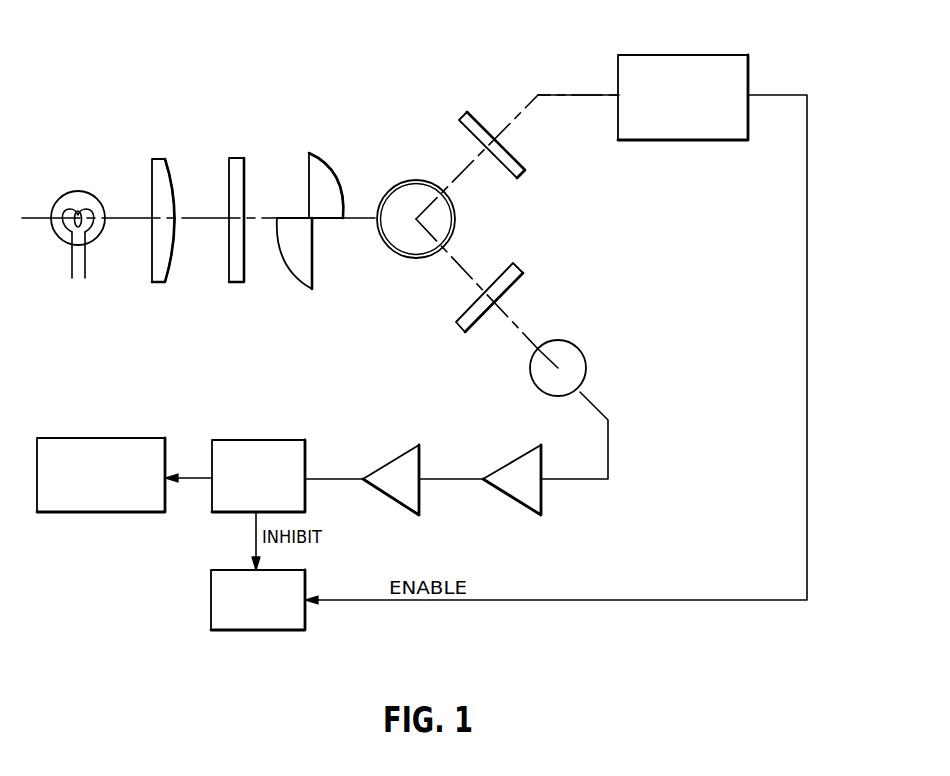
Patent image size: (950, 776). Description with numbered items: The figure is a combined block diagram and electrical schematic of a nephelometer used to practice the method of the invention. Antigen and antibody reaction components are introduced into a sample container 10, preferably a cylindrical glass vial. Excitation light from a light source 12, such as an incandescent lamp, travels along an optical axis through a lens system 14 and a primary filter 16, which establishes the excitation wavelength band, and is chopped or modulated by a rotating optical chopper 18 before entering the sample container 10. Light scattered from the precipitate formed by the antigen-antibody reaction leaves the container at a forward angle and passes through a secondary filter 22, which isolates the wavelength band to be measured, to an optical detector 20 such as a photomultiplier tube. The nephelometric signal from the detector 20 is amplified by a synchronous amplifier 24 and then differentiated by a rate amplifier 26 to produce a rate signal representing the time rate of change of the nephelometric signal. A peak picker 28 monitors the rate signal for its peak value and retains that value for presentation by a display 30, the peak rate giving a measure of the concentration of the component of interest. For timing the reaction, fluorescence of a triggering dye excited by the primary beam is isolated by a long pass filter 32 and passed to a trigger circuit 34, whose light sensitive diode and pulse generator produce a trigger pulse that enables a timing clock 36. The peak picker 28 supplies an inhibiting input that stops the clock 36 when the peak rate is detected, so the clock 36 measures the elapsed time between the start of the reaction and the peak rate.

The sample container 10 is at (408, 180).
The light source 12 is at (72, 192).
The lens system 14 is at (163, 158).
The primary filter 16 is at (243, 158).
The rotating optical chopper 18 is at (318, 154).
The optical detector 20 is at (587, 358).
The secondary filter 22 is at (519, 271).
The synchronous amplifier 24 is at (541, 445).
The rate amplifier 26 is at (419, 445).
The peak picker 28 is at (305, 440).
The display 30 is at (165, 438).
The long pass filter 32 is at (467, 112).
The trigger circuit 34 is at (693, 55).
The timing clock 36 is at (305, 630).